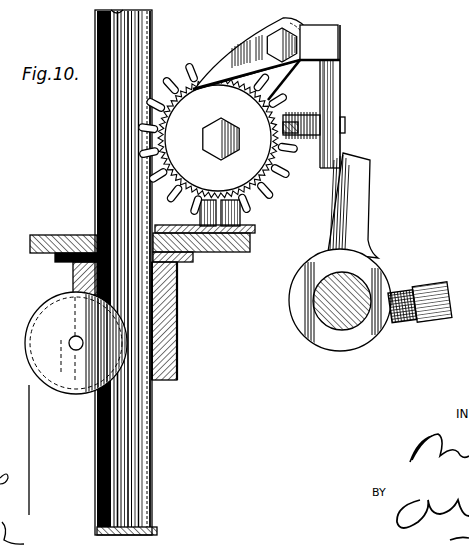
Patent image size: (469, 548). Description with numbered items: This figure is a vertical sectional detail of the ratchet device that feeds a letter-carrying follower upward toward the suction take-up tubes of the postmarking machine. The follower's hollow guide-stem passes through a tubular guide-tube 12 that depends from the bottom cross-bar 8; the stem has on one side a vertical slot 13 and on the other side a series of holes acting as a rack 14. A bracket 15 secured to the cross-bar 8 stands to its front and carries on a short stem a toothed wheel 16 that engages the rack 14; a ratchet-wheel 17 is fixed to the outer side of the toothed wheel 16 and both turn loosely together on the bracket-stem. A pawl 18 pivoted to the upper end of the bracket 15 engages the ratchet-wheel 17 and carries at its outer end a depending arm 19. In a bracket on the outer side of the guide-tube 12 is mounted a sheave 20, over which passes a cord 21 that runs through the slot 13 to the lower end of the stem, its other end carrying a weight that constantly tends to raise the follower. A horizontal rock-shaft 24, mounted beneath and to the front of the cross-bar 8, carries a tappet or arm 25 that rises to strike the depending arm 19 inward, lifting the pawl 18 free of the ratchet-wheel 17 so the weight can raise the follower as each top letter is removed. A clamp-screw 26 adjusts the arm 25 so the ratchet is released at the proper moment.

The cross-bar 8 is at (30, 247).
The guide-tube 12 is at (175, 321).
The vertical slot 13 is at (95, 170).
The rack 14 is at (175, 36).
The bracket 15 is at (229, 161).
The toothed wheel 16 is at (217, 139).
The ratchet-wheel 17 is at (218, 138).
The pawl 18 is at (249, 54).
The depending arm 19 is at (314, 96).
The sheave 20 is at (76, 343).
The cord 21 is at (24, 464).
The rock-shaft 24 is at (313, 306).
The tappet or arm 25 is at (353, 205).
The clamp-screw 26 is at (419, 303).